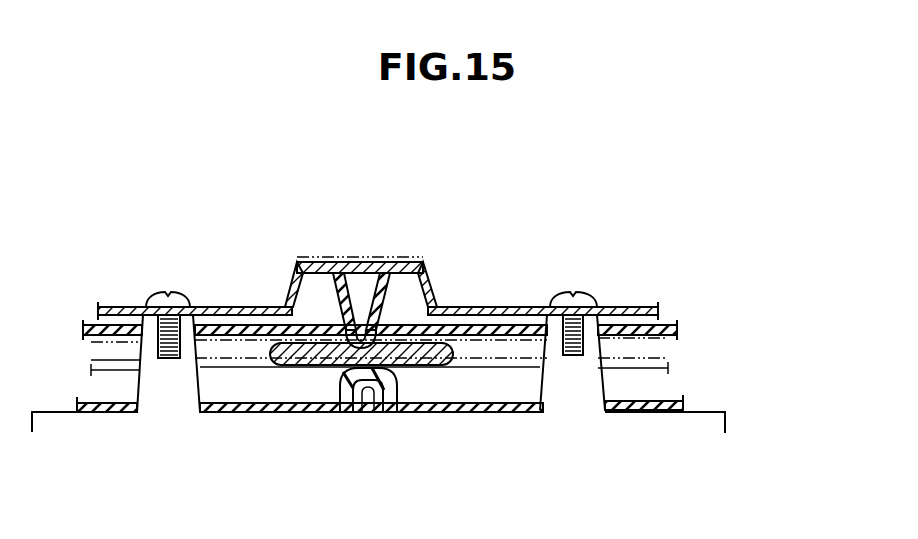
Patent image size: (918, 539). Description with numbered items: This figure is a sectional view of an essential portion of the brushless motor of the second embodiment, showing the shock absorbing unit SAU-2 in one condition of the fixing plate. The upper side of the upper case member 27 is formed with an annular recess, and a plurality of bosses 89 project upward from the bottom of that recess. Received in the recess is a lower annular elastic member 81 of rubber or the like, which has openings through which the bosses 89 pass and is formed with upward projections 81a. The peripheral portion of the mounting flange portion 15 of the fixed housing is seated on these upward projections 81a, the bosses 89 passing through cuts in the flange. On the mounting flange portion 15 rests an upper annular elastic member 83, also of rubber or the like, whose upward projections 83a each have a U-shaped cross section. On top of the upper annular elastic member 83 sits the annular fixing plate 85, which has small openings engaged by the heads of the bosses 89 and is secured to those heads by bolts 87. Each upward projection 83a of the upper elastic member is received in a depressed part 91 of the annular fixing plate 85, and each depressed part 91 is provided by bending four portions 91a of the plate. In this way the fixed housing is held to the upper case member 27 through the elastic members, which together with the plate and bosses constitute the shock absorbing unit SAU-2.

The mounting flange portion 15 is at (428, 367).
The upper case member 27 is at (693, 425).
The lower annular elastic member 81 is at (338, 417).
The upward projections 81a is at (392, 412).
The upper annular elastic member 83 is at (667, 320).
The upward projections 83a is at (338, 283).
The annular fixing plate 85 is at (528, 306).
The bolts 87 is at (155, 300).
The bosses 89 is at (150, 382).
The depressed part 91 is at (365, 264).
The bent portions 91a is at (283, 303).
The shock absorbing unit SAU-2 is at (690, 312).